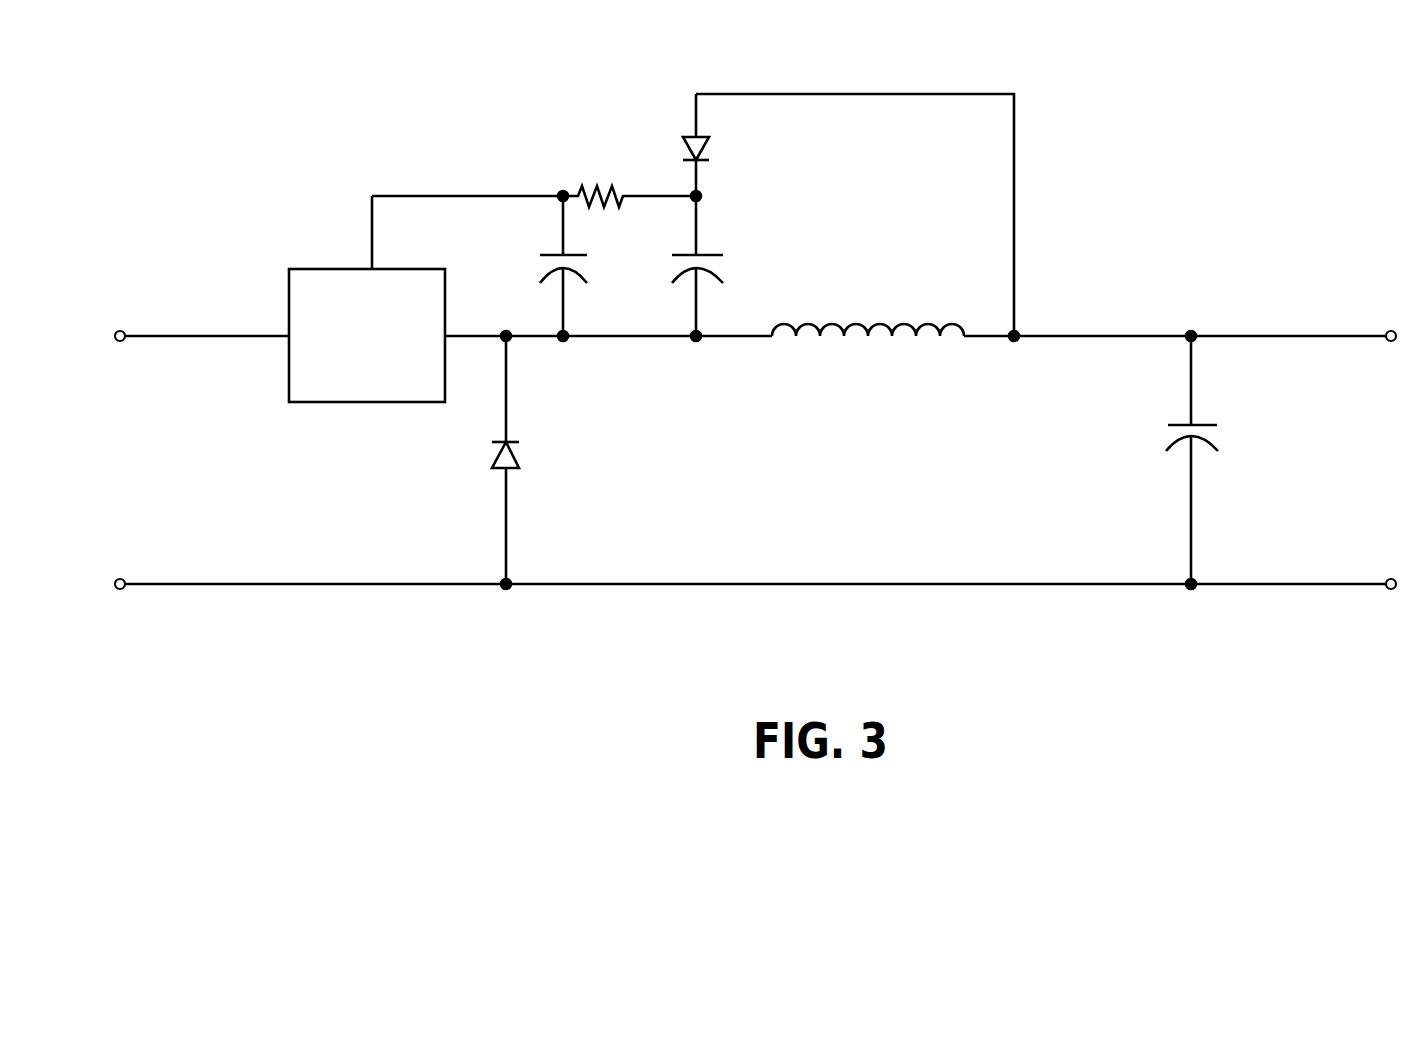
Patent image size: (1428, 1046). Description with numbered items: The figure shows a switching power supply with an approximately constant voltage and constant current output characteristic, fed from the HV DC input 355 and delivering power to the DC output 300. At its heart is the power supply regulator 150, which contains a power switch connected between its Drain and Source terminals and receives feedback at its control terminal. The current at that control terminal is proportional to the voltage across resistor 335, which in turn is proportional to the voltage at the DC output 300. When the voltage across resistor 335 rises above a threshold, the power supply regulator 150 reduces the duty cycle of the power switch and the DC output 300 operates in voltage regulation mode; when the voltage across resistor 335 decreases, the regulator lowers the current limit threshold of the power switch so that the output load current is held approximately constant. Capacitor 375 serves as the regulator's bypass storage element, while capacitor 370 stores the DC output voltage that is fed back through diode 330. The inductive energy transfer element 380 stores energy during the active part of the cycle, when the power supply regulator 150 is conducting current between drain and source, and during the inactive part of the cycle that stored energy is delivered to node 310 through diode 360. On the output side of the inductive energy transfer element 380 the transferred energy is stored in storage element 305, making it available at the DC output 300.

The power supply regulator 150 is at (377, 388).
The DC output 300 is at (1305, 460).
The storage element 305 is at (1163, 452).
The node 310 is at (1102, 320).
The diode 330 is at (713, 148).
The resistor 335 is at (604, 178).
The HV DC input 355 is at (290, 460).
The diode 360 is at (530, 450).
The capacitor 370 is at (731, 263).
The capacitor 375 is at (596, 273).
The inductive energy transfer element 380 is at (862, 350).